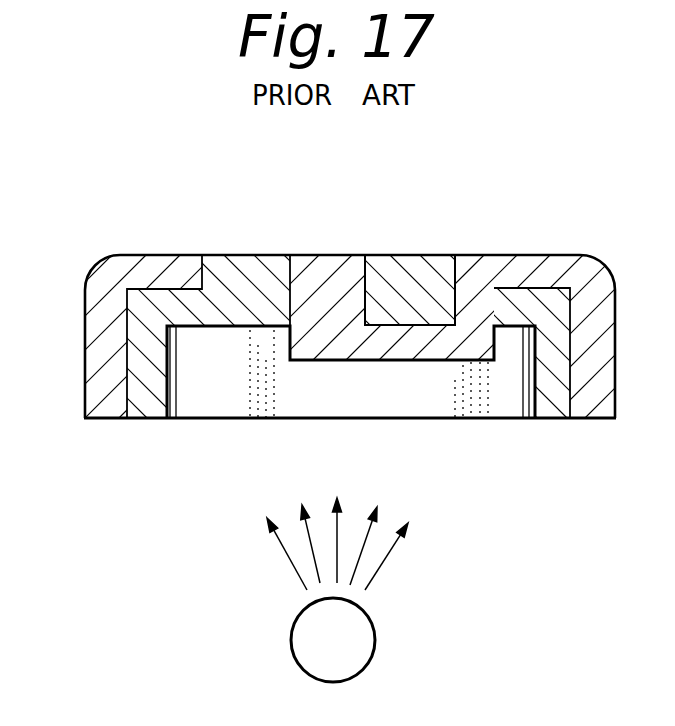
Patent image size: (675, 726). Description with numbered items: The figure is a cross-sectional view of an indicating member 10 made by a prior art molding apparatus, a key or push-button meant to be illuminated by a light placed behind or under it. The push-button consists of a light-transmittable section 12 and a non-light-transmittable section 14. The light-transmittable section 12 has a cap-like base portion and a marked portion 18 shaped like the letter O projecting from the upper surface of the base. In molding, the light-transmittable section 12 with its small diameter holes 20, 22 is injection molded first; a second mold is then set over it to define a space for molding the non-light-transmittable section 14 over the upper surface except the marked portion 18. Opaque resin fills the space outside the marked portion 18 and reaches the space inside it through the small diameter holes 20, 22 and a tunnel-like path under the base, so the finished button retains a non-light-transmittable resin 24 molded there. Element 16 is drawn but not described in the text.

The indicating member 10 is at (552, 221).
The light-transmittable section 12 is at (143, 348).
The non-light-transmittable section 14 is at (154, 241).
The light transmitting window 16 is at (233, 328).
The marked portion 18 is at (240, 253).
The small diameter hole 20 is at (292, 298).
The small diameter hole 22 is at (460, 298).
The non-light-transmittable resin 24 is at (440, 350).